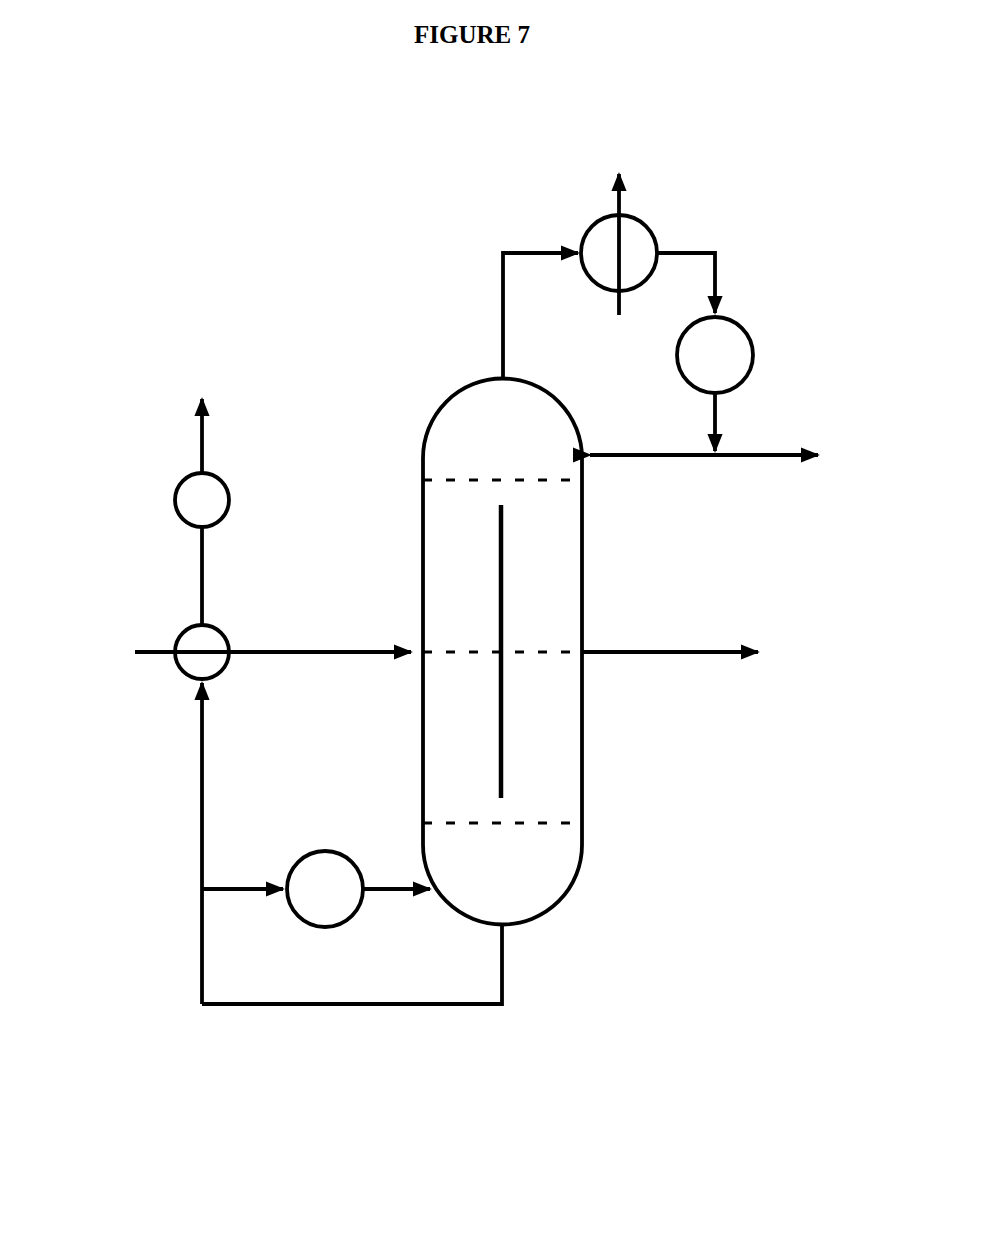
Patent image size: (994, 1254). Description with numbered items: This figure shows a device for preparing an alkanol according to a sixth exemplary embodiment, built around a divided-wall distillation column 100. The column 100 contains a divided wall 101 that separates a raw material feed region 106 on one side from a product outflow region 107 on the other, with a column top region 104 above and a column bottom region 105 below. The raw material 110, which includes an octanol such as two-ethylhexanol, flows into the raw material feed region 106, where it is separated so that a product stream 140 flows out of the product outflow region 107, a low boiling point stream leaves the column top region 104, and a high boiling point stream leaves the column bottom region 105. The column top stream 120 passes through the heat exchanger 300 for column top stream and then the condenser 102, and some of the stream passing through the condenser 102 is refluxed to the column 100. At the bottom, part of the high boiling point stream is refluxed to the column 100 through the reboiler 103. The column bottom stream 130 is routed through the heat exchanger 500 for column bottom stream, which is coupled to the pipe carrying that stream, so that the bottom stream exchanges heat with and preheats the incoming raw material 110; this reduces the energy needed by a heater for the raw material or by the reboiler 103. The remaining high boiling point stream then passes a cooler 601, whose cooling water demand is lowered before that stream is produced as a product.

The divided-wall distillation column 100 is at (426, 374).
The divided wall 101 is at (503, 548).
The condenser 102 is at (753, 352).
The reboiler 103 is at (303, 859).
The column top region 104 is at (447, 422).
The column bottom region 105 is at (555, 877).
The raw material feed region 106 is at (437, 718).
The product outflow region 107 is at (570, 737).
The raw material 110 is at (333, 652).
The column top stream 120 is at (522, 247).
The column bottom stream 130 is at (503, 973).
The product stream 140 is at (703, 657).
The heat exchanger for column top stream 300 is at (648, 222).
The heat exchanger for column bottom stream 500 is at (183, 668).
The cooler 601 is at (180, 517).